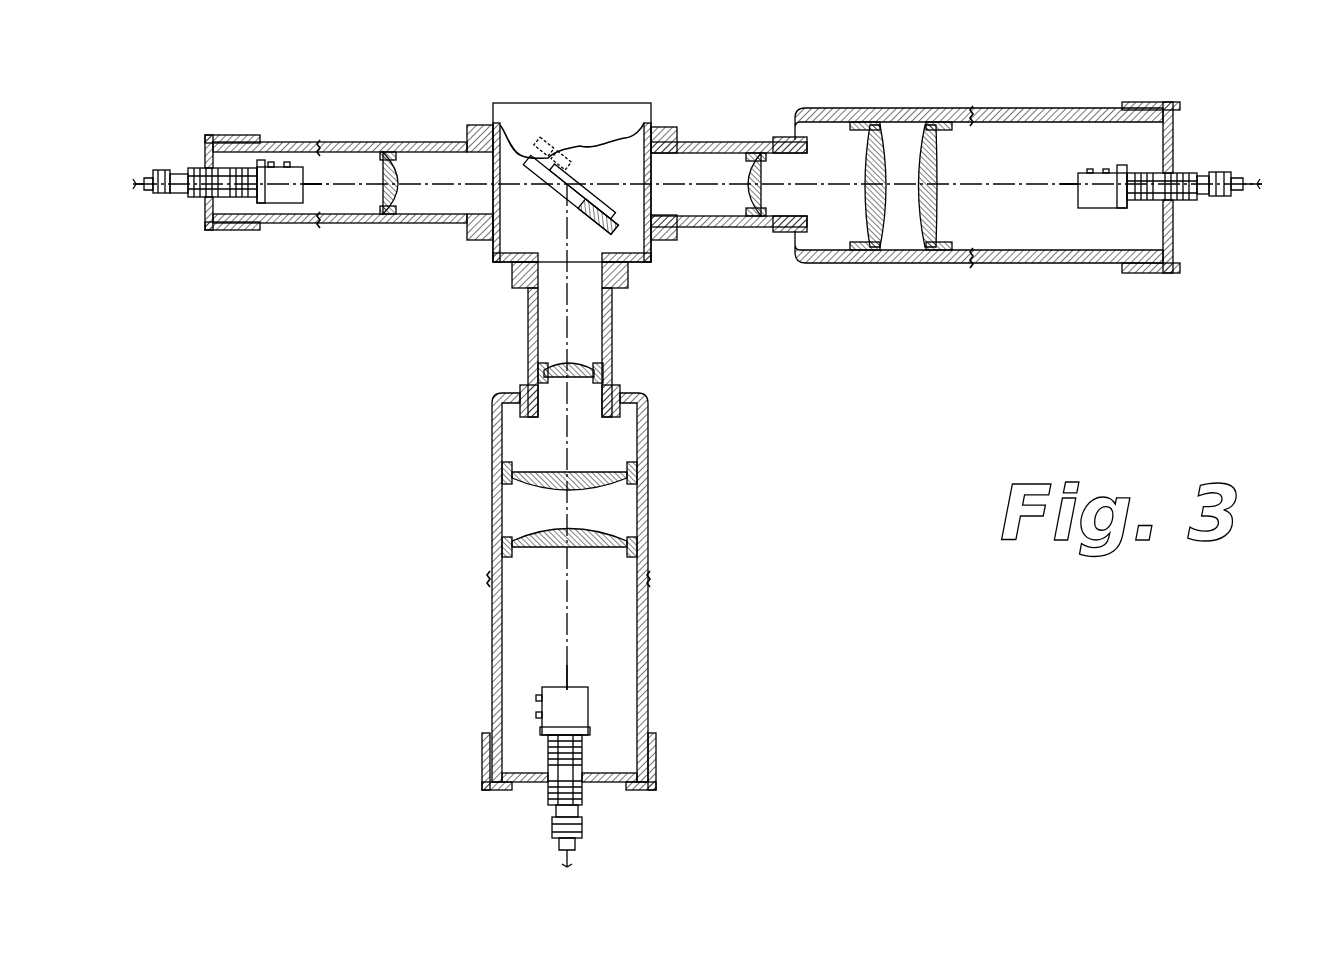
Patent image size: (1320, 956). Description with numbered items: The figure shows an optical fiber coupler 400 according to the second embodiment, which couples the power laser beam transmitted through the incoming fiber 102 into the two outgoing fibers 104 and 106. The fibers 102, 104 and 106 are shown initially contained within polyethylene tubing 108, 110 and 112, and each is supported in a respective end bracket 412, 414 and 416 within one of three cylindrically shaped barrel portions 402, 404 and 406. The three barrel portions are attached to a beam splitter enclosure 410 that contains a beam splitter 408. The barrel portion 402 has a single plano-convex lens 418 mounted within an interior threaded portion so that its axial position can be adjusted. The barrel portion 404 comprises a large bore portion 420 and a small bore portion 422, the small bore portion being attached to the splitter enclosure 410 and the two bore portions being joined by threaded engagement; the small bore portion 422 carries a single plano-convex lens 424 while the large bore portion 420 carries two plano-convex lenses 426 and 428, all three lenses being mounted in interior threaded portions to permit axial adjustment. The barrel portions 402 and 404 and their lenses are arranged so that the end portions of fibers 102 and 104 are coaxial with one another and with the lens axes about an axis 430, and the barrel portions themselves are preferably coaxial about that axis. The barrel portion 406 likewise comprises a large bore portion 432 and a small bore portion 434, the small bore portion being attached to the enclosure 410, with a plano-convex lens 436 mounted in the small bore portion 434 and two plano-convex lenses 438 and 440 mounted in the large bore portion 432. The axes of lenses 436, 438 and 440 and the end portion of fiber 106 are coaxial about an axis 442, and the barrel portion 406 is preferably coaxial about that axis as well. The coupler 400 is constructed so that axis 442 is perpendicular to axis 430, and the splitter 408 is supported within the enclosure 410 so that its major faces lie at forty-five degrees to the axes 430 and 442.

The incoming fiber 102 is at (140, 186).
The outgoing fiber 104 is at (1254, 182).
The outgoing fiber 106 is at (569, 864).
The polyethylene tubing 108 is at (148, 194).
The polyethylene tubing 110 is at (1246, 184).
The polyethylene tubing 112 is at (552, 844).
The optical fiber coupler 400 is at (1062, 400).
The barrel portion 402 is at (382, 142).
The barrel portion 404 is at (793, 266).
The barrel portion 406 is at (664, 393).
The beam splitter 408 is at (573, 184).
The enclosure 410 is at (526, 104).
The end bracket 412 is at (203, 162).
The end bracket 414 is at (1179, 139).
The end bracket 416 is at (600, 782).
The plano-convex lens 418 is at (392, 177).
The large bore portion 420 is at (904, 264).
The small bore portion 422 is at (703, 141).
The plano-convex lens 424 is at (742, 204).
The plano-convex lens 426 is at (879, 163).
The plano-convex lens 428 is at (942, 159).
The axis 430 is at (718, 183).
The large bore portion 432 is at (651, 494).
The small bore portion 434 is at (528, 313).
The plano-convex lens 436 is at (538, 364).
The plano-convex lens 438 is at (555, 488).
The plano-convex lens 440 is at (611, 523).
The axis 442 is at (567, 452).